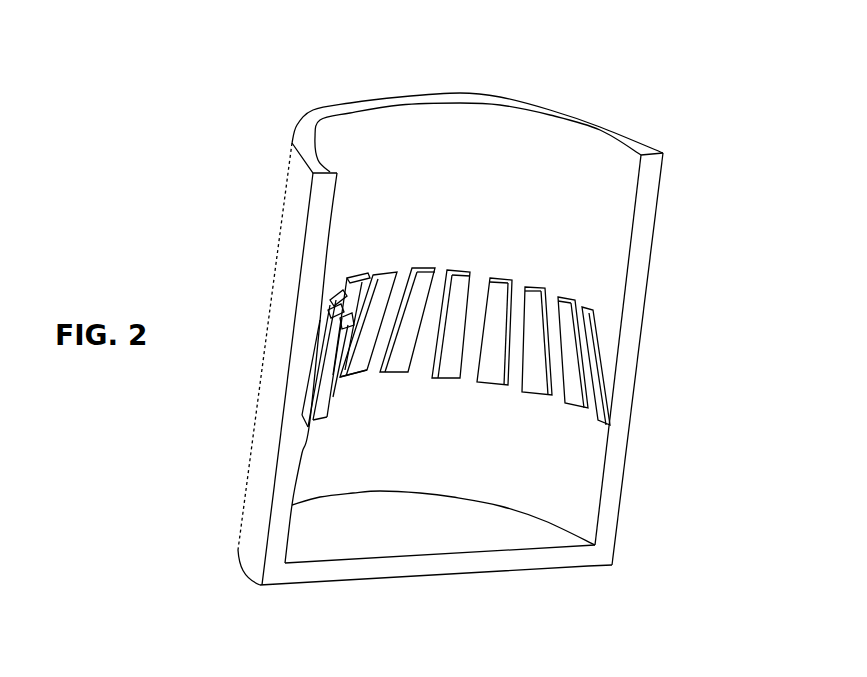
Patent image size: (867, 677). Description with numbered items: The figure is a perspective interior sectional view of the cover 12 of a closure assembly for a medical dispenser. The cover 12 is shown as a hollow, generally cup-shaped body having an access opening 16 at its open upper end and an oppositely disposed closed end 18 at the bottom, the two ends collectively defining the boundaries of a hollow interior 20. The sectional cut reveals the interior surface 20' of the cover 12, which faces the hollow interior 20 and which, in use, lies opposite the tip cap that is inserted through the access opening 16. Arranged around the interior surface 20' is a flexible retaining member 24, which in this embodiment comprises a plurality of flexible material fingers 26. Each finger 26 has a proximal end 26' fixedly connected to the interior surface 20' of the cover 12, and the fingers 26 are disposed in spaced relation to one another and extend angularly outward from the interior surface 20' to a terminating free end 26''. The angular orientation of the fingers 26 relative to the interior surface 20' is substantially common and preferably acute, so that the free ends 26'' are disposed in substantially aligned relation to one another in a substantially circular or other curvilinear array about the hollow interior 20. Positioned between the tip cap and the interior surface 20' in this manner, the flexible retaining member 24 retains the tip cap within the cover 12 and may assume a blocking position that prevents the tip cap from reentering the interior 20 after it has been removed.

The cover 12 is at (633, 398).
The access opening 16 is at (649, 147).
The closed end 18 is at (588, 567).
The hollow interior 20 is at (443, 569).
The interior surface 20' is at (671, 252).
The flexible retaining member 24 is at (508, 417).
The flexible material fingers 26 is at (543, 310).
The proximal end 26' is at (351, 422).
The free end 26'' is at (386, 304).